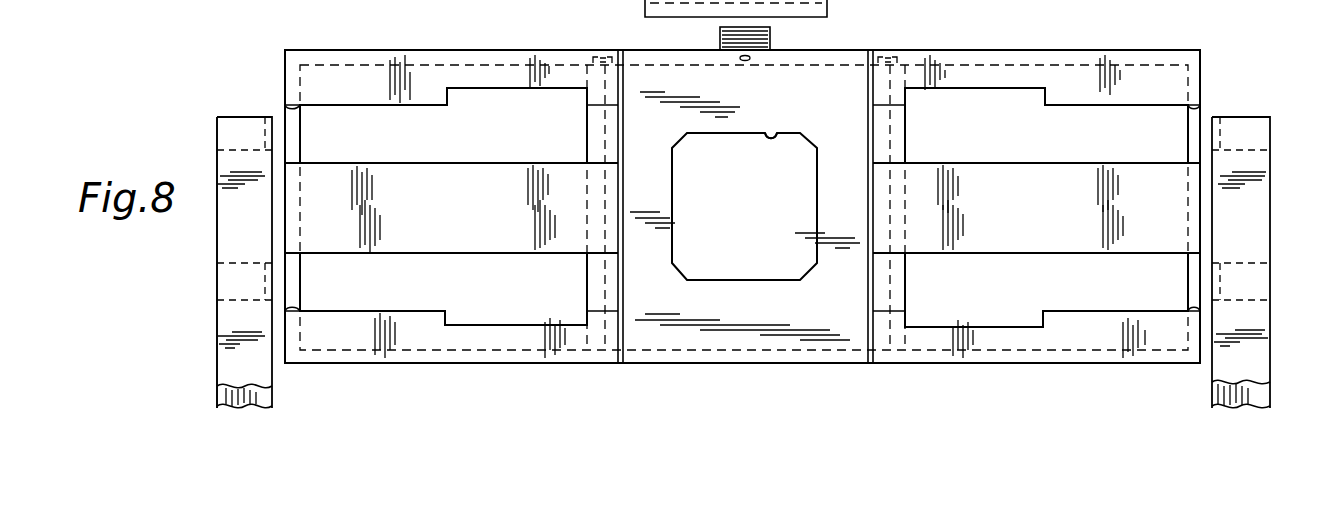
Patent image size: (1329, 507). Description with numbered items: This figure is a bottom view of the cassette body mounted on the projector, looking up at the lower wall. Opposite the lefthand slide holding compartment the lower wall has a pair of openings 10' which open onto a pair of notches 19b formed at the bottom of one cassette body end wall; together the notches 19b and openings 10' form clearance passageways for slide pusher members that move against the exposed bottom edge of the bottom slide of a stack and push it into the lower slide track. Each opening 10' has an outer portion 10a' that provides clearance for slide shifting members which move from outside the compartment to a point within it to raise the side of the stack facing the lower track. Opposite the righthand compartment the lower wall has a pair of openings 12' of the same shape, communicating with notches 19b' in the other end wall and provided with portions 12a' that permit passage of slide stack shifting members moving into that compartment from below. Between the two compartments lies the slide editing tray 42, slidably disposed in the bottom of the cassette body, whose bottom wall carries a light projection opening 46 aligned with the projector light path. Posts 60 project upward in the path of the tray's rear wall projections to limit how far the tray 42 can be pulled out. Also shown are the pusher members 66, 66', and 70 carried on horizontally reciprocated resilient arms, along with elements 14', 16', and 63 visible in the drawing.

The opening 10' is at (443, 207).
The outer portion of opening 10a' is at (516, 206).
The opening 12' is at (1046, 207).
The portion of opening 12a' is at (975, 206).
The intermediate rail member 14' is at (742, 208).
The intermediate rail member 16' is at (1036, 208).
The notch 19b is at (290, 212).
The notch 19b' is at (1256, 203).
The slide editing tray 42 is at (745, 212).
The light projection opening 46 is at (771, 138).
The post 60 is at (605, 60).
The tab 63 is at (771, 38).
The pusher member 66 is at (215, 262).
The pusher member 66' is at (194, 262).
The pusher member 70 is at (1253, 352).